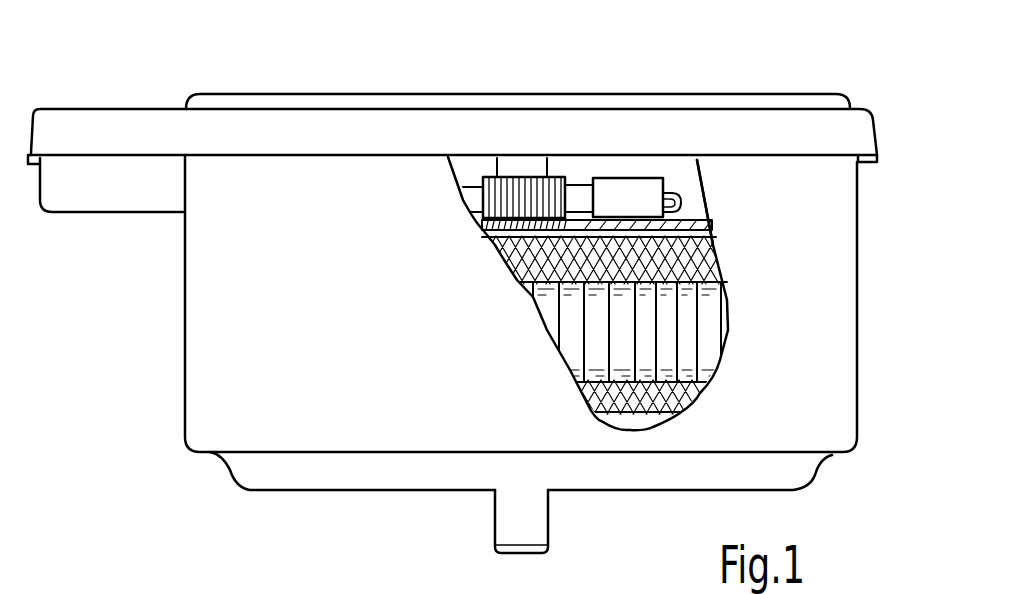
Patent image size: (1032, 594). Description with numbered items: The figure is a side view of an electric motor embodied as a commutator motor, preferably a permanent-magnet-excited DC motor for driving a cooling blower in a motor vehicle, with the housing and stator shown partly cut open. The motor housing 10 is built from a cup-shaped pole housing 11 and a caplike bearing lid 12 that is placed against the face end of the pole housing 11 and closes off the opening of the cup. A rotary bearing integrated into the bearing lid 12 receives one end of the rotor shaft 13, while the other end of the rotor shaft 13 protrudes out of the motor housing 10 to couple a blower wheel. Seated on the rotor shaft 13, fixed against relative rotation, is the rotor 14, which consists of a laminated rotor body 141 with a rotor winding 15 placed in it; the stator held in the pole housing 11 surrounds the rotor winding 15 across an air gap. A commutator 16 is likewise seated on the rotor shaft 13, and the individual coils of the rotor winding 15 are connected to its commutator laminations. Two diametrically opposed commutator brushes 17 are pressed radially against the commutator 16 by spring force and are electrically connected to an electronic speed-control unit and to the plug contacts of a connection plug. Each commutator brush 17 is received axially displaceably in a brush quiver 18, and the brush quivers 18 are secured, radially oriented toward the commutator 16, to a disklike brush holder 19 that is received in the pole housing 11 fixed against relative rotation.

The motor housing 10 is at (857, 103).
The pole housing 11 is at (790, 305).
The bearing lid 12 is at (832, 143).
The rotor shaft 13 is at (523, 527).
The rotor 14 is at (640, 413).
The rotor body 141 is at (685, 332).
The rotor winding 15 is at (713, 250).
The commutator 16 is at (527, 187).
The commutator brushes 17 is at (472, 197).
The brush quiver 18 is at (617, 197).
The brush holder 19 is at (700, 215).